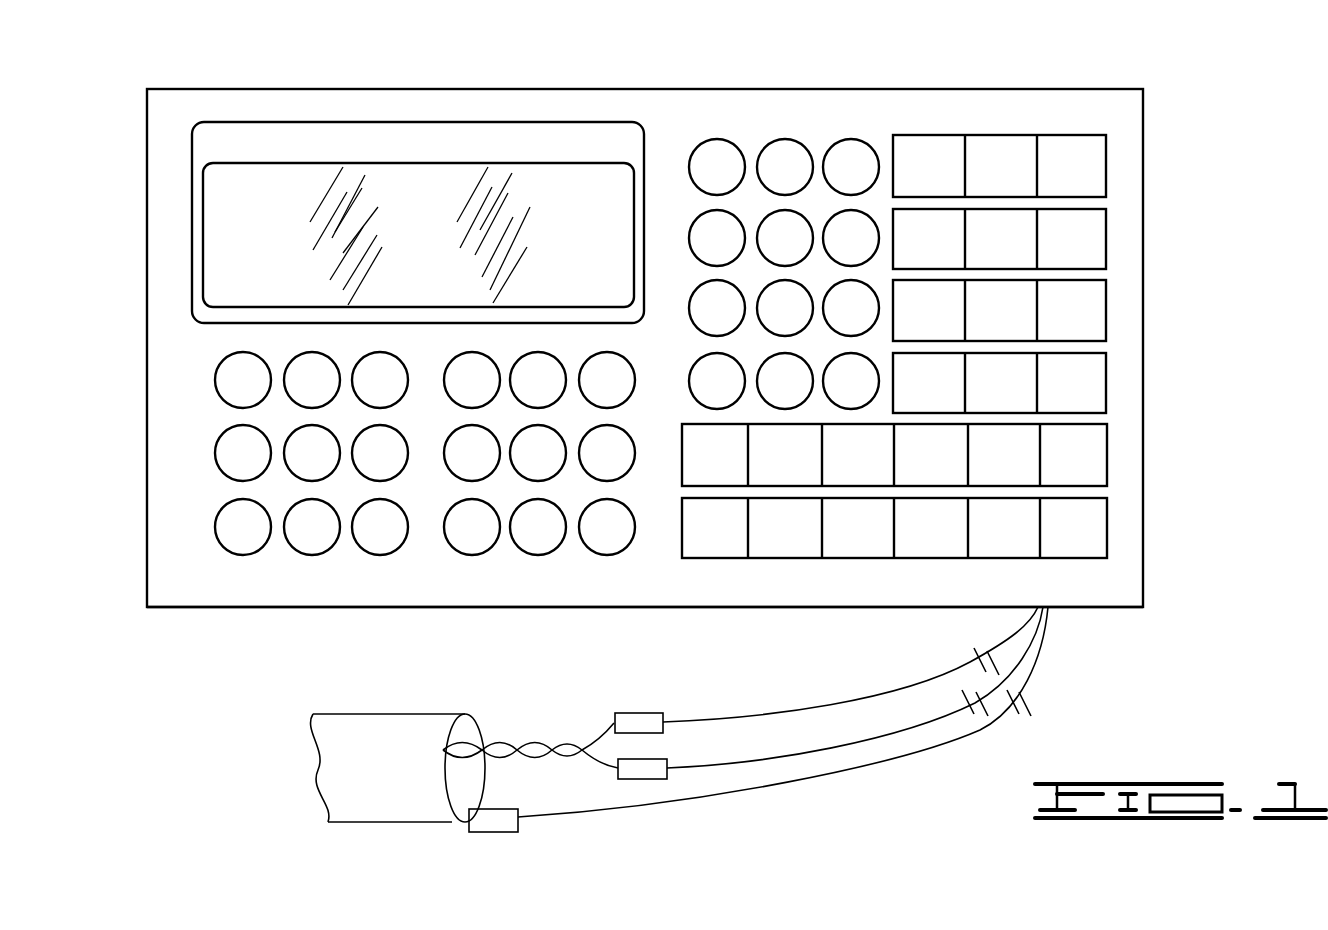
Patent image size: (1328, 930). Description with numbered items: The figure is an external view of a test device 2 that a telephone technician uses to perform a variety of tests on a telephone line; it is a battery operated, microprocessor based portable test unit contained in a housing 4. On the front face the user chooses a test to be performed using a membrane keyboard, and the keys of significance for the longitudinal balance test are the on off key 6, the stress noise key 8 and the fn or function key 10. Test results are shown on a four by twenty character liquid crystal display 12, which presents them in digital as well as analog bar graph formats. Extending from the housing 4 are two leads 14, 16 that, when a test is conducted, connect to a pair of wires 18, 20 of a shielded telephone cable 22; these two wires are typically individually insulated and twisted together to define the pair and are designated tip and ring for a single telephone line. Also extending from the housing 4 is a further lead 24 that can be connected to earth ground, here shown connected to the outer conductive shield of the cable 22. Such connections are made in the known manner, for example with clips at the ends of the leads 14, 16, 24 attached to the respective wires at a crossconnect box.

The test device 2 is at (511, 608).
The housing 4 is at (185, 609).
The on off key 6 is at (247, 530).
The stress noise key 8 is at (1005, 459).
The fn key 10 is at (379, 533).
The liquid crystal display 12 is at (430, 200).
The lead 14 is at (753, 760).
The lead 16 is at (857, 700).
The wire 18 is at (602, 765).
The wire 20 is at (597, 727).
The shielded telephone cable 22 is at (389, 797).
The lead 24 is at (740, 803).